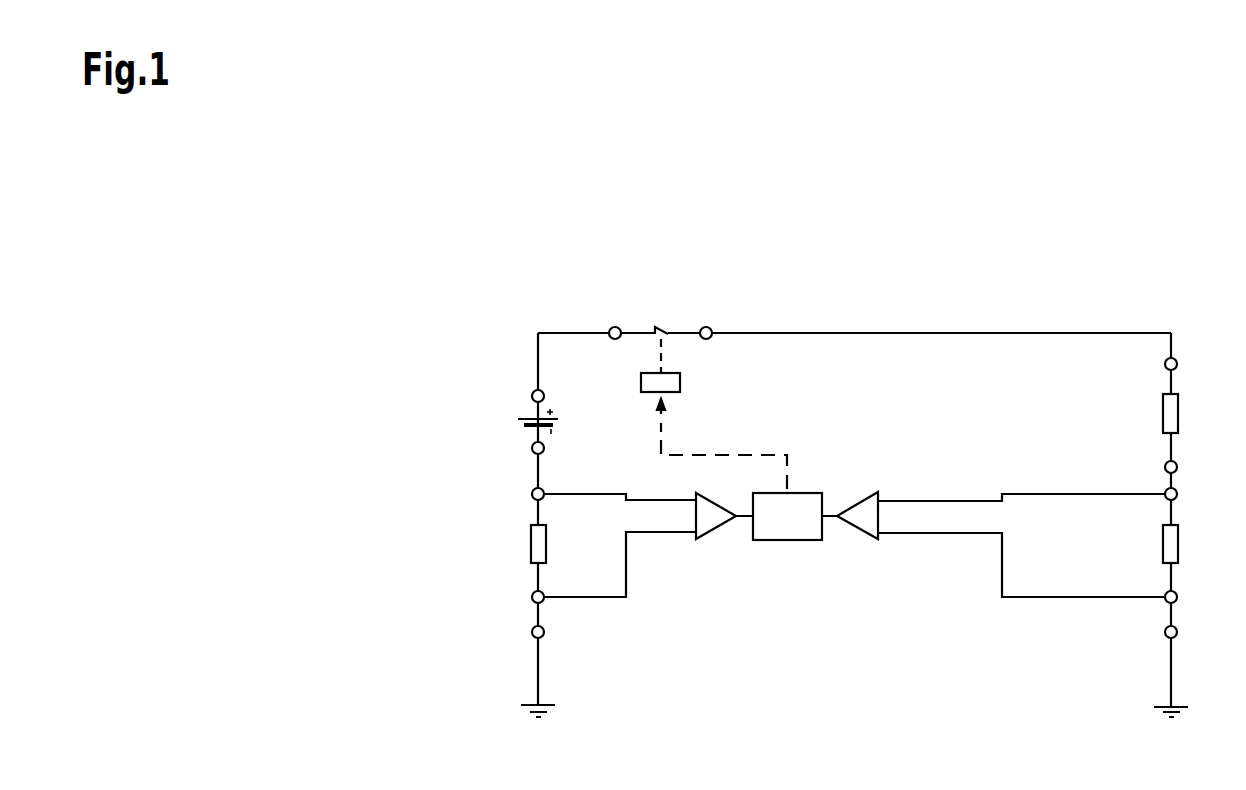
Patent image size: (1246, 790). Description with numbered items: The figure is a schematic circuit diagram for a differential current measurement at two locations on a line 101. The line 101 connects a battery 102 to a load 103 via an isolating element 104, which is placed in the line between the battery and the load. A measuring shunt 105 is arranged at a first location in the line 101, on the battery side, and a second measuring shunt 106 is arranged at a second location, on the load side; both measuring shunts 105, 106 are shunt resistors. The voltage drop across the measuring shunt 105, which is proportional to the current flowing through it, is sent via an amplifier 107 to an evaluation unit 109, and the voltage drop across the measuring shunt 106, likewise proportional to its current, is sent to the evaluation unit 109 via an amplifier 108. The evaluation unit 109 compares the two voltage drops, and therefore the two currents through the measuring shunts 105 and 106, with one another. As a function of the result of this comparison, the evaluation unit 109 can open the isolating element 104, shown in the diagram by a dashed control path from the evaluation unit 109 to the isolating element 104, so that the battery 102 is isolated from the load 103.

The line 101 is at (910, 333).
The battery 102 is at (513, 422).
The load 103 is at (1148, 414).
The isolating element 104 is at (698, 388).
The measuring shunt 105 is at (511, 544).
The measuring shunt 106 is at (1196, 544).
The amplifier 107 is at (718, 527).
The amplifier 108 is at (850, 525).
The evaluation unit 109 is at (770, 540).